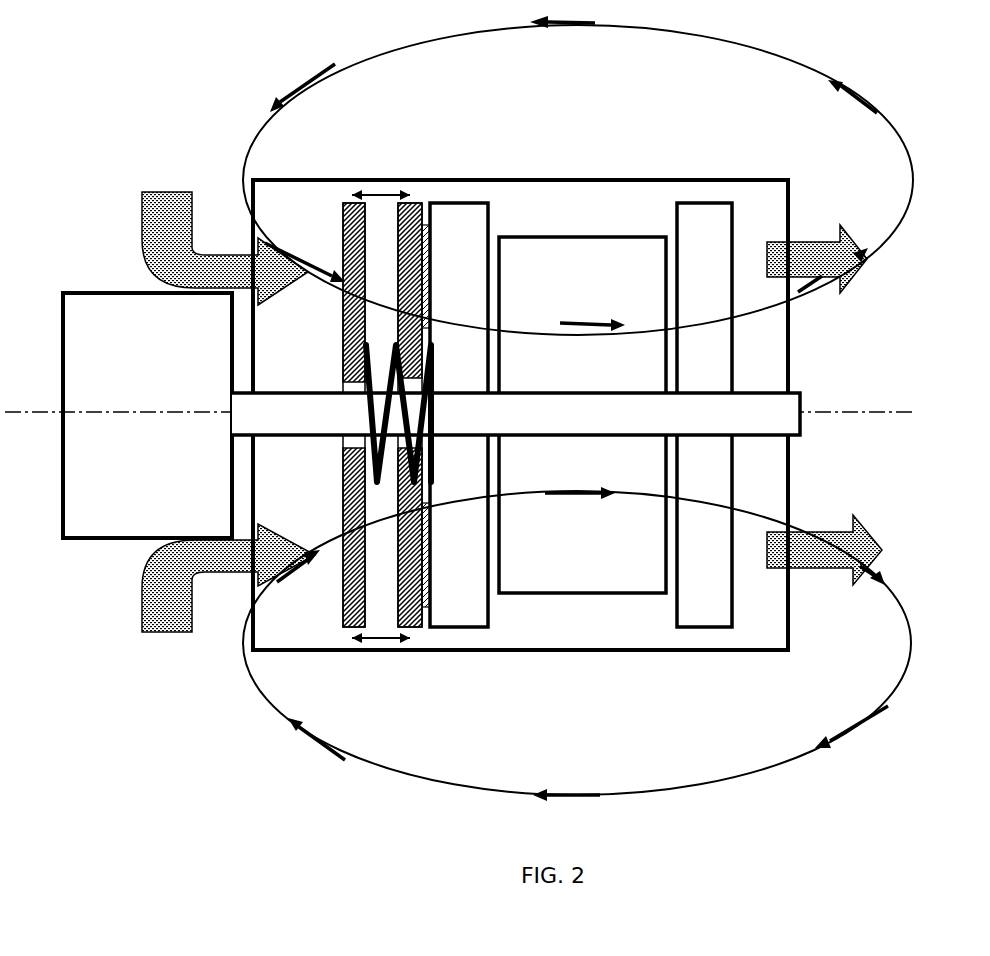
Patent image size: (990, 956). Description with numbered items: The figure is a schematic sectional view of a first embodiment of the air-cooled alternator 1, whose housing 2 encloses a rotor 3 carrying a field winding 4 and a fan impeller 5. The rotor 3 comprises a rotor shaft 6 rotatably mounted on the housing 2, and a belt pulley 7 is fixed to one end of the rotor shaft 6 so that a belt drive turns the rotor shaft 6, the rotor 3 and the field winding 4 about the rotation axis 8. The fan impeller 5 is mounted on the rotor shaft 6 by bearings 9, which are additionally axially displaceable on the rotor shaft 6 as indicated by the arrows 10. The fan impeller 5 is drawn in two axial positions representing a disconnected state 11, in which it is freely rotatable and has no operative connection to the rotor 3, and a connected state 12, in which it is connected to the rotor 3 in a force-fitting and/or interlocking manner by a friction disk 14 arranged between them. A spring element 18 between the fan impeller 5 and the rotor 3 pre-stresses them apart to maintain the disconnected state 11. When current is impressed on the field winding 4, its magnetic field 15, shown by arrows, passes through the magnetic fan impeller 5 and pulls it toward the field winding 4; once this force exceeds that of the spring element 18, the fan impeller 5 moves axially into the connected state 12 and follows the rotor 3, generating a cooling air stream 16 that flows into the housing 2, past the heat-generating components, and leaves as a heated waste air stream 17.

The alternator 1 is at (132, 727).
The housing 2 is at (778, 180).
The rotor 3 is at (458, 217).
The field winding 4 is at (564, 255).
The fan impeller 5 is at (368, 426).
The rotor shaft 6 is at (801, 394).
The belt pulley 7 is at (100, 325).
The rotation axis 8 is at (862, 413).
The bearings 9 is at (341, 447).
The arrows 10 is at (386, 195).
The disconnected state 11 is at (355, 645).
The connected state 12 is at (400, 645).
The friction disk 14 is at (431, 597).
The magnetic field 15 is at (905, 142).
The cooling air stream 16 is at (155, 238).
The waste air stream 17 is at (802, 255).
The spring element 18 is at (365, 432).